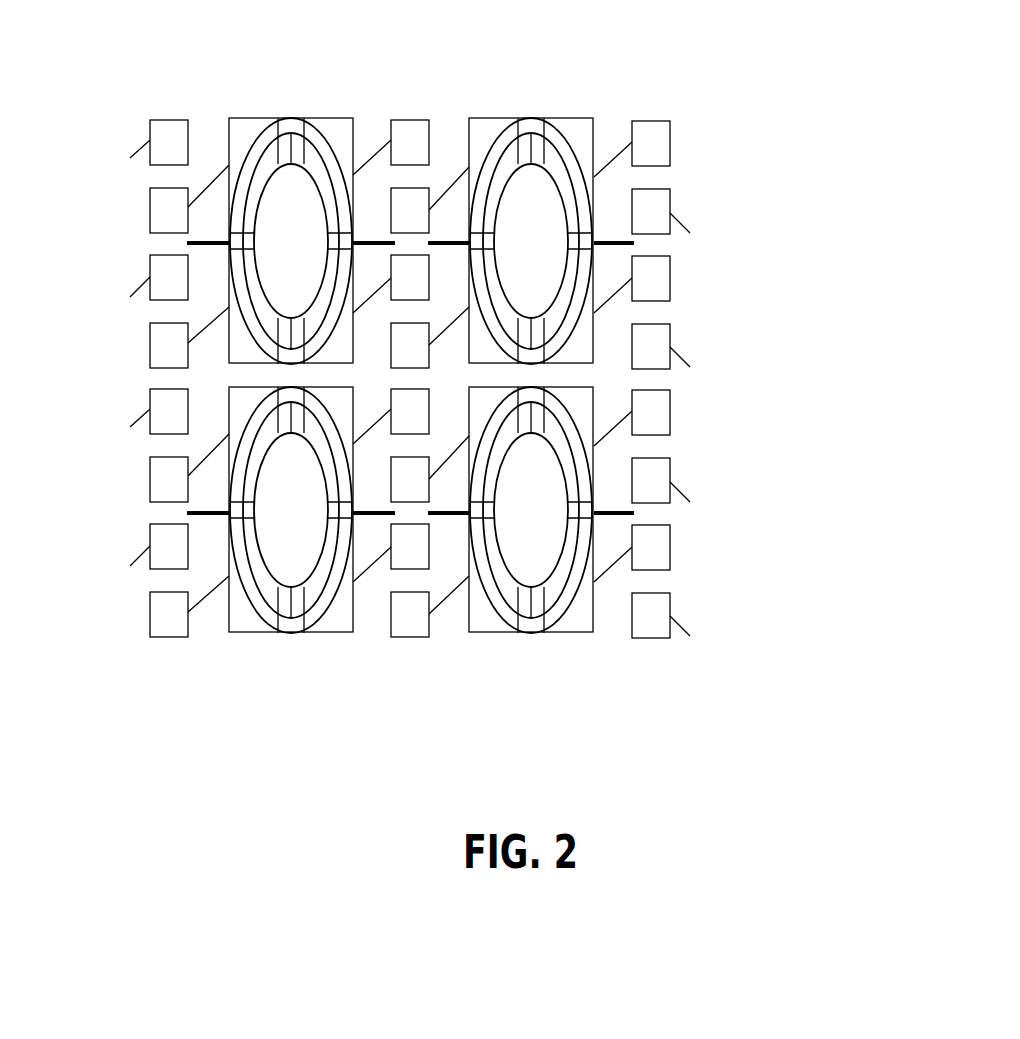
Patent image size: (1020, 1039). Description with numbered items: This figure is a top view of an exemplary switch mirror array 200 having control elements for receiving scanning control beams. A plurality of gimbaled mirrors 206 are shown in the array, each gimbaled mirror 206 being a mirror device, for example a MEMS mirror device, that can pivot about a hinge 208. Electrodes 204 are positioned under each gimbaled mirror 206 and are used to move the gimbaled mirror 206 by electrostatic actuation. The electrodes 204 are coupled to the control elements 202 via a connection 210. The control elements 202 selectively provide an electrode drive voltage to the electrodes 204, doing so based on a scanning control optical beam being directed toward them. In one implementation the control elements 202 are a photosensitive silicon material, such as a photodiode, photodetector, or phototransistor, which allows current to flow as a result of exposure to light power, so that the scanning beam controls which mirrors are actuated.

The switch mirror array 200 is at (472, 392).
The control elements 202 is at (718, 117).
The electrodes 204 is at (587, 125).
The gimbaled mirror 206 is at (540, 296).
The hinge 208 is at (635, 245).
The connection 210 is at (620, 566).